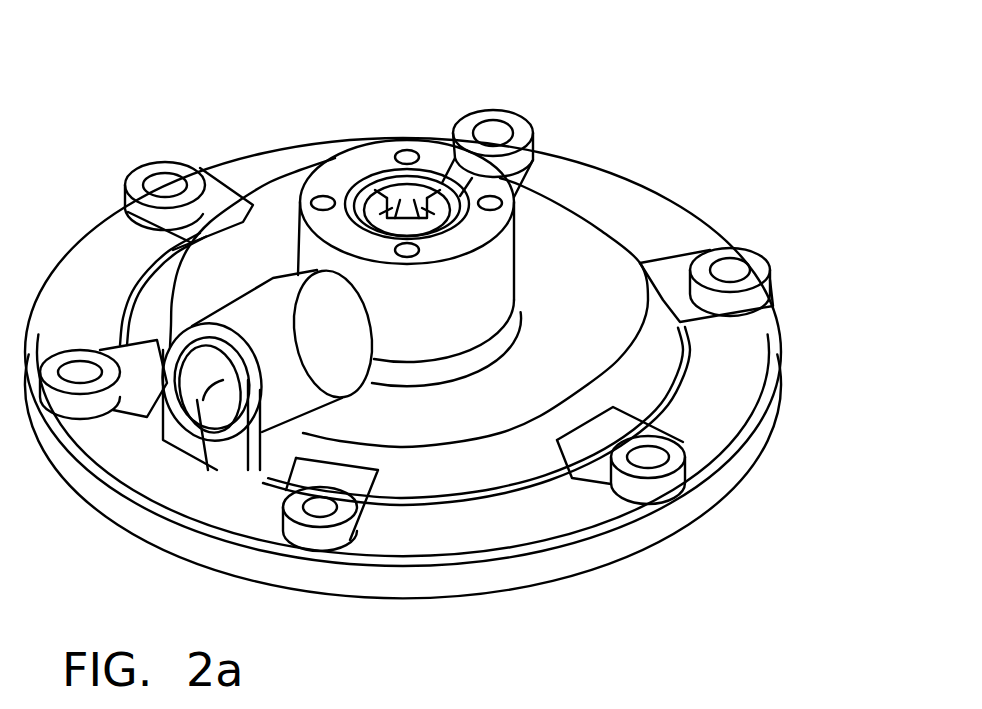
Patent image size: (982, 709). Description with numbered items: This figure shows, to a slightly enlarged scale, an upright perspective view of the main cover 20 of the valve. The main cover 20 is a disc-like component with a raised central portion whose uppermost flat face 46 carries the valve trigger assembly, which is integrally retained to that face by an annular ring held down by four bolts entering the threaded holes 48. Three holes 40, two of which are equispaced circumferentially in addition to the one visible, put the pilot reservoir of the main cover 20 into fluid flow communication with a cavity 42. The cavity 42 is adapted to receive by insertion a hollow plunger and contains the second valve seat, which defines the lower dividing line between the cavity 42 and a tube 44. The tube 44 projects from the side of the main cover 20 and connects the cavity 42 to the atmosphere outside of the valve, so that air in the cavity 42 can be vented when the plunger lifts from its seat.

The main cover 20 is at (604, 322).
The holes 40 is at (380, 190).
The cavity 42 is at (408, 188).
The tube 44 is at (208, 470).
The uppermost flat face 46 is at (330, 172).
The threaded holes 48 is at (527, 188).